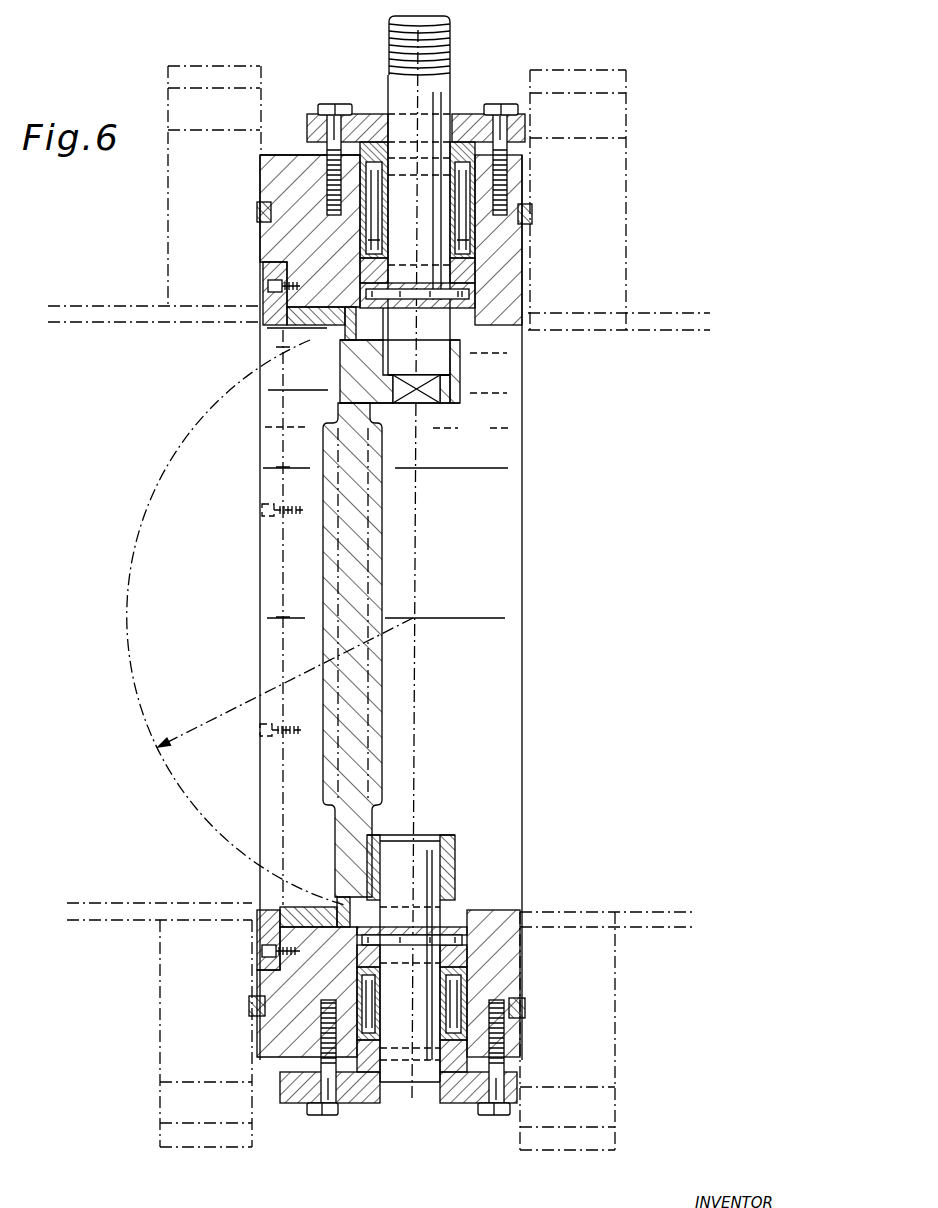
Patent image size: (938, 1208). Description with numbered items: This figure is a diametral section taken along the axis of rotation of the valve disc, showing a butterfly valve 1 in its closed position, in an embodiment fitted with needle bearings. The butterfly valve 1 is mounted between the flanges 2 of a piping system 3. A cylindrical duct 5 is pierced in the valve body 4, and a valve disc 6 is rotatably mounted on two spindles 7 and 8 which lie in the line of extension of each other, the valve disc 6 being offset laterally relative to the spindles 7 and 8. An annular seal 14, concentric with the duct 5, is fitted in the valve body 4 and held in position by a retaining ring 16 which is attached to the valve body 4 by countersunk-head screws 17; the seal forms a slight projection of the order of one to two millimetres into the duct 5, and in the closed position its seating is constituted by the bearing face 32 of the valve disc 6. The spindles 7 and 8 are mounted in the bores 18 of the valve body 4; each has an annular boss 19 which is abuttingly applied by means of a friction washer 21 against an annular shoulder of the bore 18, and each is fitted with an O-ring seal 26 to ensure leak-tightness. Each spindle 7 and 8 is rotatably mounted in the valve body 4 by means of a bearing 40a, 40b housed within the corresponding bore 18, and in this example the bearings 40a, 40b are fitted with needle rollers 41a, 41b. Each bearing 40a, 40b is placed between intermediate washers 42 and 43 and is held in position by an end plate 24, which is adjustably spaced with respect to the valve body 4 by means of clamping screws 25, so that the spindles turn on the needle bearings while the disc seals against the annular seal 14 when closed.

The butterfly valve 1 is at (326, 80).
The flanges 2 is at (612, 190).
The piping system 3 is at (637, 340).
The valve body 4 is at (500, 312).
The cylindrical duct 5 is at (492, 338).
The valve disc 6 is at (352, 548).
The spindle 7 is at (432, 90).
The spindle 8 is at (420, 1068).
The annular seal 14 is at (345, 320).
The retaining ring 16 is at (272, 313).
The countersunk-head screws 17 is at (268, 285).
The bores 18 is at (470, 958).
The annular boss 19 is at (475, 943).
The friction washer 21 is at (456, 930).
The end plate 24 is at (357, 1095).
The clamping screws 25 is at (320, 1113).
The O-ring seal 26 is at (360, 940).
The bearing face 32 is at (350, 342).
The bearing 40a is at (475, 228).
The bearing 40b is at (357, 985).
The needle rollers 41a is at (360, 240).
The needle rollers 41b is at (468, 985).
The intermediate washer 42 is at (360, 262).
The intermediate washer 43 is at (325, 150).